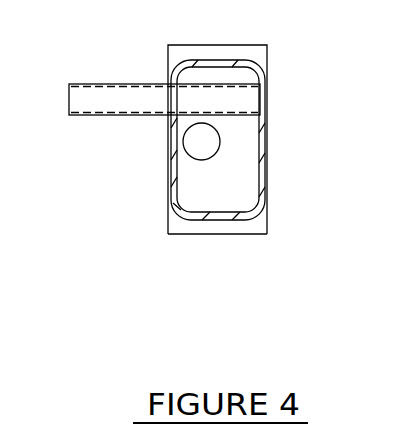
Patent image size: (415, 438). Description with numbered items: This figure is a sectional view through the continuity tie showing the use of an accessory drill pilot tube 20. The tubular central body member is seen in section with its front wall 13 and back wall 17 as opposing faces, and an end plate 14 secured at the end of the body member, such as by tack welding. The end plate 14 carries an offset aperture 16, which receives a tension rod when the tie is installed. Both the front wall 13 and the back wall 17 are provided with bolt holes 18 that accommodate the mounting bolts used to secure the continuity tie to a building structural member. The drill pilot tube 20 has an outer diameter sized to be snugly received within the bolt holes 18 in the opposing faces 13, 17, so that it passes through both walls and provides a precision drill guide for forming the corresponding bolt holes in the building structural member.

The front wall 13 is at (168, 172).
The end plate 14 is at (247, 235).
The offset aperture 16 is at (217, 150).
The back wall 17 is at (268, 140).
The bolt holes 18 is at (168, 86).
The drill pilot tube 20 is at (109, 120).